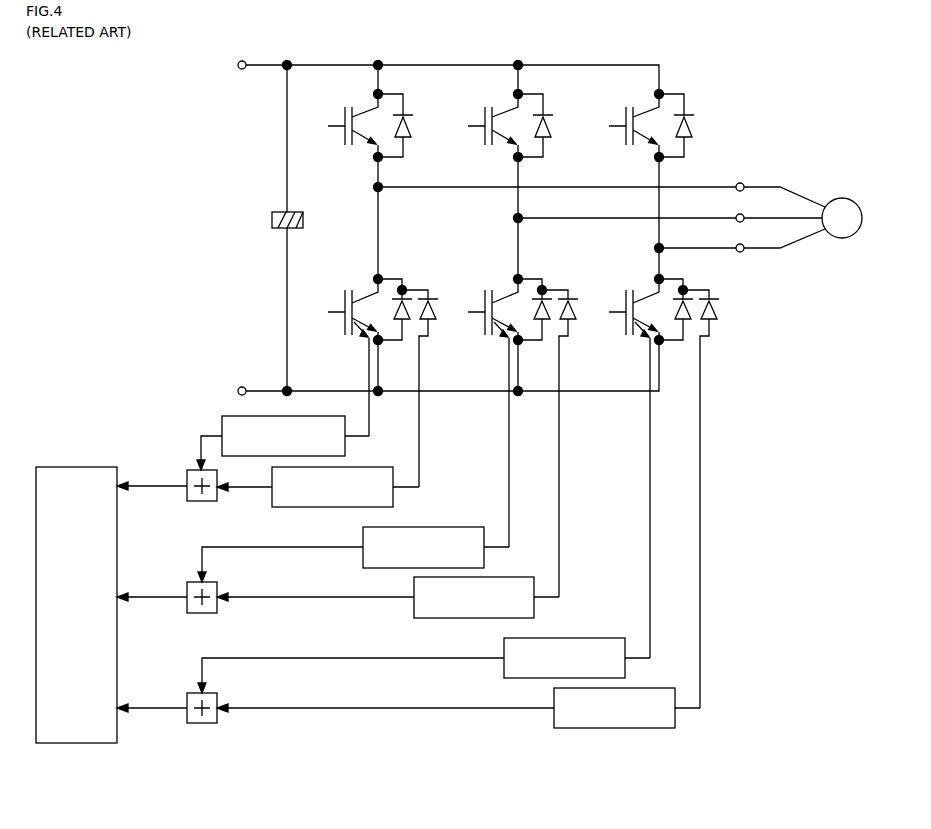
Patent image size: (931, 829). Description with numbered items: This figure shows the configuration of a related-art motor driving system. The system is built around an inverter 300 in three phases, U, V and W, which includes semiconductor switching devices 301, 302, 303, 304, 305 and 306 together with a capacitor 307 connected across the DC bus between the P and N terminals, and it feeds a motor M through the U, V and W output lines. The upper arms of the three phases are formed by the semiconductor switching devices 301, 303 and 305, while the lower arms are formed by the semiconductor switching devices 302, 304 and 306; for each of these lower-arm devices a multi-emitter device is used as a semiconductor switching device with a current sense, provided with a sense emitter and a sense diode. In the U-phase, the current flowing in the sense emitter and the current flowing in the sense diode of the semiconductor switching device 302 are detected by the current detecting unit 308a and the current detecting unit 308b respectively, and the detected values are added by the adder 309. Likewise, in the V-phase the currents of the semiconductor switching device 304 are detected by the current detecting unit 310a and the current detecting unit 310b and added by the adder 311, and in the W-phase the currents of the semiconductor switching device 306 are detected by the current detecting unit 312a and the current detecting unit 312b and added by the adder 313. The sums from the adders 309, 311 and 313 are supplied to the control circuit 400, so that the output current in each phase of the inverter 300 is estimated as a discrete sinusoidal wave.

The inverter 300 is at (560, 44).
The semiconductor switching device 301 is at (336, 148).
The semiconductor switching device 302 is at (334, 335).
The semiconductor switching device 303 is at (477, 148).
The semiconductor switching device 304 is at (474, 335).
The semiconductor switching device 305 is at (616, 145).
The semiconductor switching device 306 is at (616, 340).
The capacitor 307 is at (268, 220).
The current detecting unit 308a is at (345, 449).
The current detecting unit 308b is at (273, 493).
The adder 309 is at (190, 476).
The current detecting unit 310a is at (363, 562).
The current detecting unit 310b is at (415, 612).
The adder 311 is at (190, 588).
The current detecting unit 312a is at (505, 669).
The current detecting unit 312b is at (562, 730).
The adder 313 is at (190, 699).
The control circuit 400 is at (70, 745).